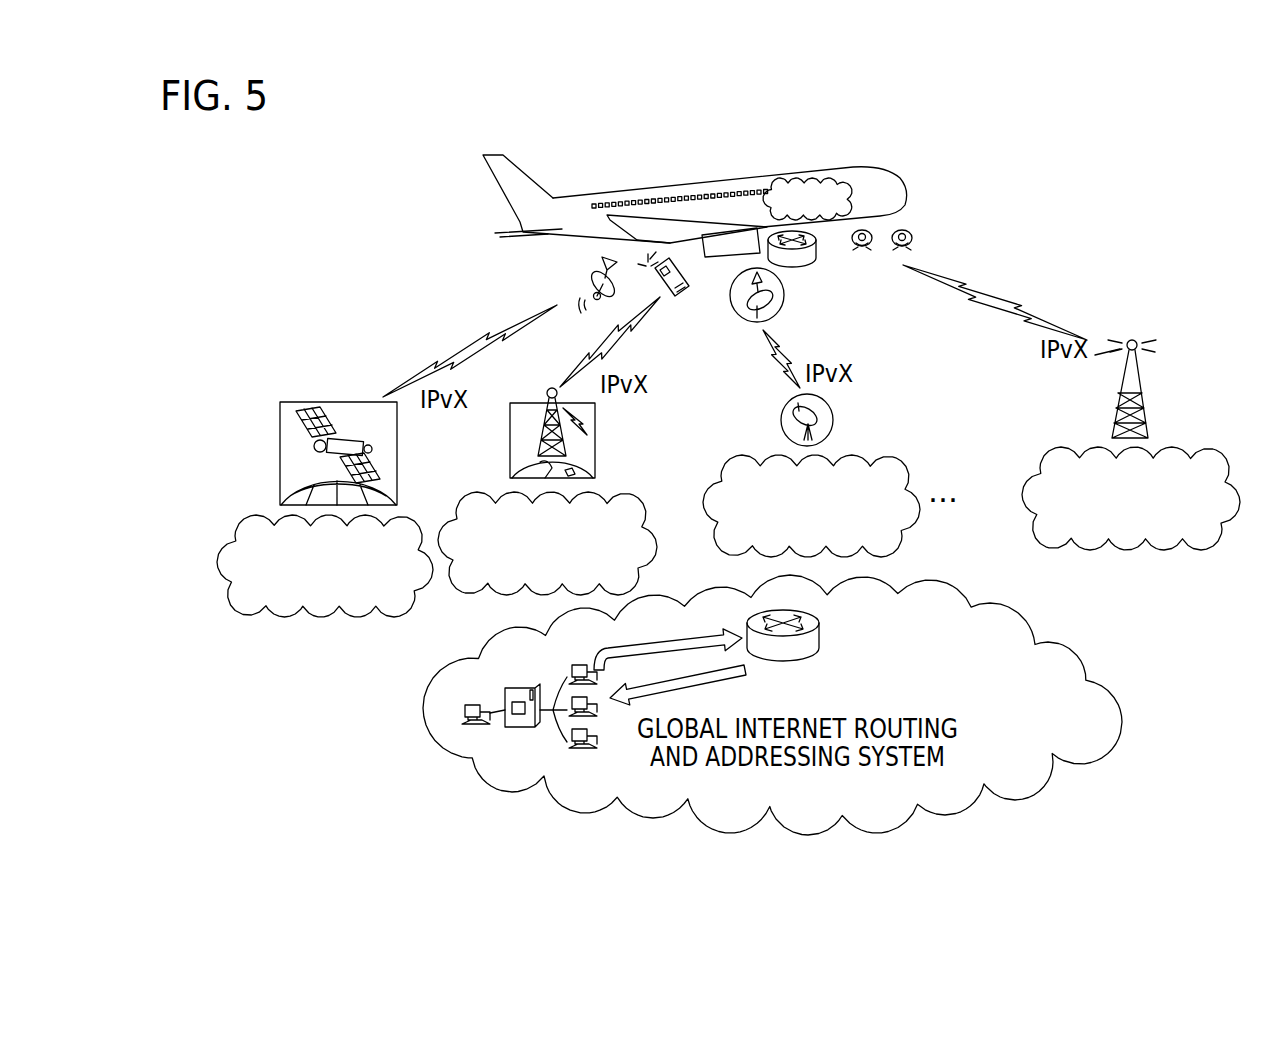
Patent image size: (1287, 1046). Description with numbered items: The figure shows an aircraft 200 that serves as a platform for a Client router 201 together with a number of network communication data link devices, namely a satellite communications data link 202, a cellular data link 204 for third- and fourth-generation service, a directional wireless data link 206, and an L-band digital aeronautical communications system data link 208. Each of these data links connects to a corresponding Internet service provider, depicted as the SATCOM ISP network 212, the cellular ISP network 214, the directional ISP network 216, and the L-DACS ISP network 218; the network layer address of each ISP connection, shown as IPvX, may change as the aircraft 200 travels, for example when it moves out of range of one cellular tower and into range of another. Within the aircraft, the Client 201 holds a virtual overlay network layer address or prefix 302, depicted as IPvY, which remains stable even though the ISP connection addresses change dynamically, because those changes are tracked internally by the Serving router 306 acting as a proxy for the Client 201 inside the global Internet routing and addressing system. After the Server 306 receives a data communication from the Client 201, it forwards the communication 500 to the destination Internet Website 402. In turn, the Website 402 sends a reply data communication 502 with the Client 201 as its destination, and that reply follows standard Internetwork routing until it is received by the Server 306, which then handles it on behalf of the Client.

The aircraft 200 is at (646, 190).
The virtual overlay network layer address 302 is at (826, 176).
The Client router 201 is at (807, 264).
The satellite communications data link 202 is at (527, 320).
The cellular data link (3G/4G) 204 is at (640, 340).
The directional wireless data link 206 is at (795, 350).
The L-band digital aeronautical communications system data link 208 is at (1000, 281).
The ISP network (SATCOM) 212 is at (396, 601).
The ISP network (3G/4G) 214 is at (473, 593).
The ISP network (directional) 216 is at (903, 527).
The ISP network (L-DACS) 218 is at (1088, 550).
The Serving router 306 is at (818, 657).
The Internet Website 402 is at (513, 727).
The forwarded communication 500 is at (673, 693).
The reply data communication 502 is at (683, 638).